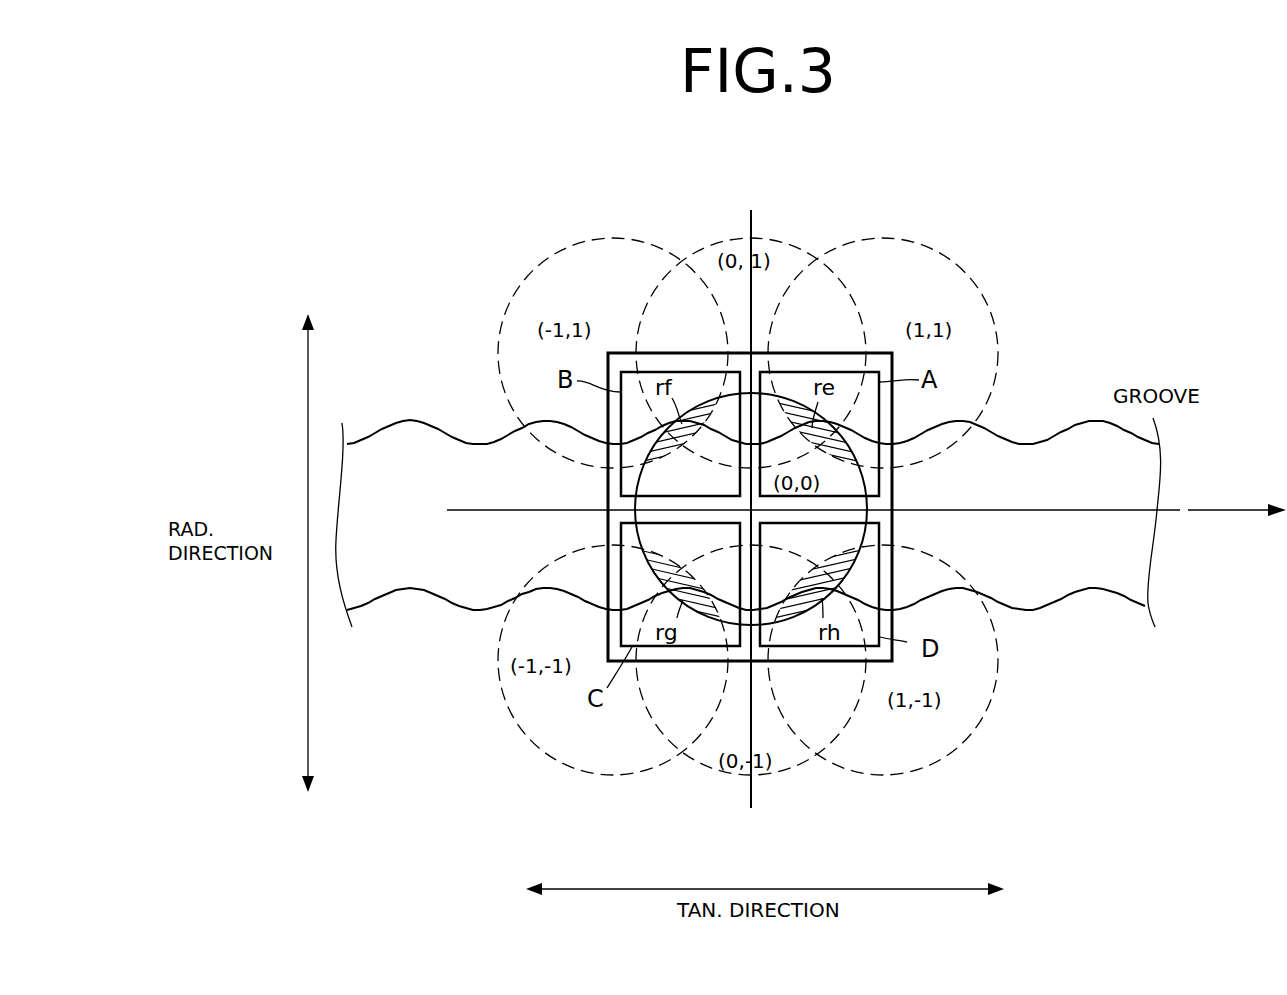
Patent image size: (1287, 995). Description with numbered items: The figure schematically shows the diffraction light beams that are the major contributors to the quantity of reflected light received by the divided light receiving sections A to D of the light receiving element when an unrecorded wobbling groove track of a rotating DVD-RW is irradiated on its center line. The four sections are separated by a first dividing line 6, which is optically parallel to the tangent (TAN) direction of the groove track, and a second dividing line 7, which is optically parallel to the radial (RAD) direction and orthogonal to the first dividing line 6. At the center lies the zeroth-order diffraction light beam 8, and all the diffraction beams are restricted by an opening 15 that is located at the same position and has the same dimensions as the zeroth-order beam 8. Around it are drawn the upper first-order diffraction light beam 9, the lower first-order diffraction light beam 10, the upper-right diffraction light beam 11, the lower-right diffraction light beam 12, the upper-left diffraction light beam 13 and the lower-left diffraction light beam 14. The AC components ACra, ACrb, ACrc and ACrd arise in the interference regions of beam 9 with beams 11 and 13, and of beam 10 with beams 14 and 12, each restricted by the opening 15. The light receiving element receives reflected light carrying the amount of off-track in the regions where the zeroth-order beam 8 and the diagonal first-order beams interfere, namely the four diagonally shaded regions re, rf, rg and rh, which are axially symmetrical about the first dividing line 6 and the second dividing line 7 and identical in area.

The first dividing line 6 is at (1180, 508).
The second dividing line 7 is at (750, 213).
The (0, 0)-th diffraction light beam 8 is at (796, 509).
The opening 15 is at (858, 548).
The (0, 1)-th diffraction light beam 9 is at (780, 243).
The (0, -1)-th diffraction light beam 10 is at (783, 770).
The (1, 1)-th diffraction light beam 11 is at (945, 257).
The (1, -1)-th diffraction light beam 12 is at (977, 737).
The (-1, 1)-th diffraction light beam 13 is at (550, 257).
The (-1, -1)-th diffraction light beam 14 is at (530, 742).